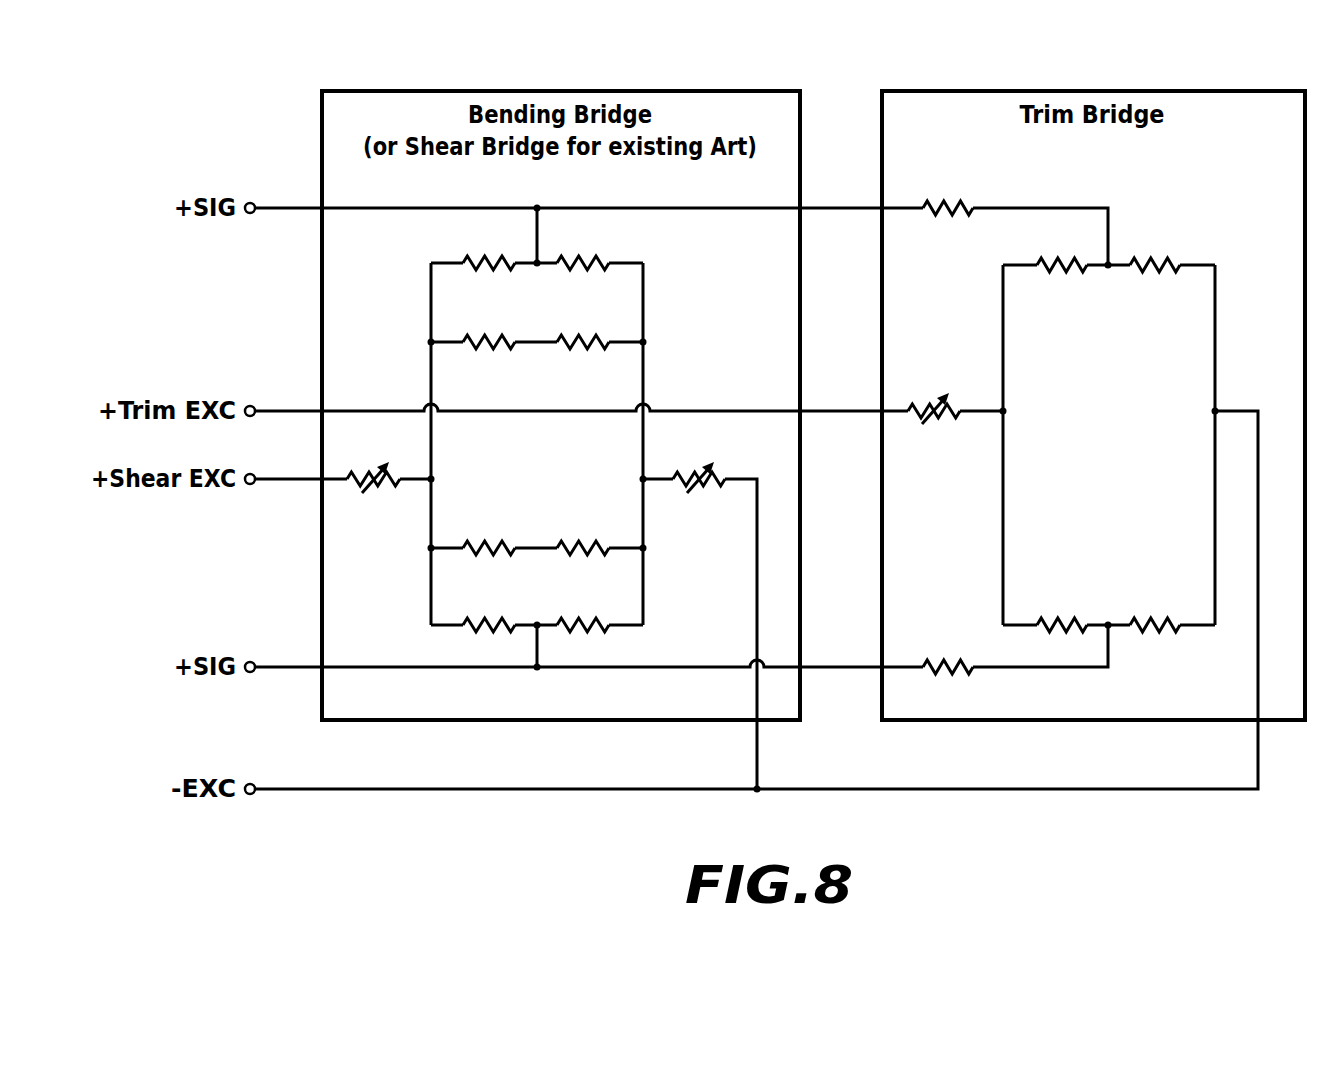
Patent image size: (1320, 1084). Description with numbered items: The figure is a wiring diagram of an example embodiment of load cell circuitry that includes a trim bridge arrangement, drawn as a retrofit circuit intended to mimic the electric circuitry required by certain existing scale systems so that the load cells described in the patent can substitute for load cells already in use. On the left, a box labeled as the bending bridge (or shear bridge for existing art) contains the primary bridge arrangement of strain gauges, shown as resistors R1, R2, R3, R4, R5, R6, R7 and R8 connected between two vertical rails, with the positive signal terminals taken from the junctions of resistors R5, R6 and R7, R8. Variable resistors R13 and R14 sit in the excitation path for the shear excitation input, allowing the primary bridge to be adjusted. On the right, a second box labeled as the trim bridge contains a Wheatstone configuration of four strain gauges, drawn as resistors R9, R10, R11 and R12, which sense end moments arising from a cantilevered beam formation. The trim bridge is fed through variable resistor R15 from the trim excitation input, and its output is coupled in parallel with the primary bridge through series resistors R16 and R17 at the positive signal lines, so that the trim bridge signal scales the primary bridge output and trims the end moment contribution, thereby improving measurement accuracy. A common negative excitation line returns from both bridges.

The bending bridge resistor R1 is at (489, 535).
The bending bridge resistor R2 is at (583, 535).
The bending bridge resistor R3 is at (489, 329).
The bending bridge resistor R4 is at (583, 329).
The bending bridge resistor R5 is at (489, 250).
The bending bridge resistor R6 is at (583, 250).
The bending bridge resistor R7 is at (489, 612).
The bending bridge resistor R8 is at (583, 612).
The trim bridge resistor R9 is at (1062, 251).
The trim bridge resistor R10 is at (1155, 251).
The trim bridge resistor R11 is at (1060, 611).
The trim bridge resistor R12 is at (1155, 611).
The variable resistor (shear excitation) R13 is at (374, 465).
The variable resistor (shear excitation) R14 is at (700, 464).
The variable resistor (trim excitation) R15 is at (935, 396).
The trim bridge series resistor R16 is at (950, 194).
The trim bridge series resistor R17 is at (948, 653).